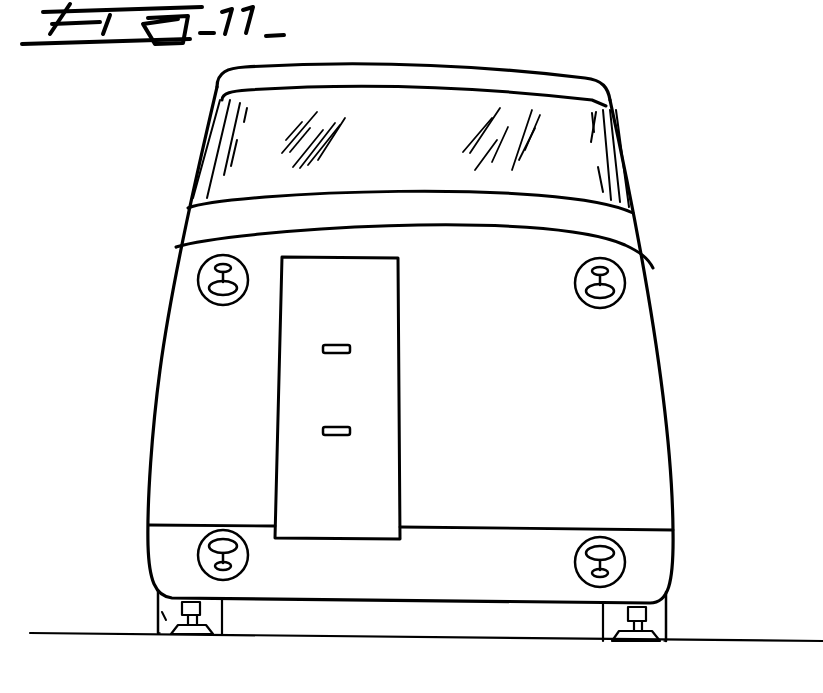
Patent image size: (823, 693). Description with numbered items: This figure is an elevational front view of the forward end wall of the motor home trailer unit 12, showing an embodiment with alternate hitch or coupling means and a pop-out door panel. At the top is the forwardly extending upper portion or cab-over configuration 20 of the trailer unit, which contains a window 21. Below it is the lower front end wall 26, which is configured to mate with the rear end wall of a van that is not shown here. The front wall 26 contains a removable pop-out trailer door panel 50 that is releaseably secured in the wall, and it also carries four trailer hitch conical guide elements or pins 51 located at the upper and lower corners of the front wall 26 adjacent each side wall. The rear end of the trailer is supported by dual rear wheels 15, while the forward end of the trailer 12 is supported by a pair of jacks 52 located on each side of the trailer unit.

The motor home trailer unit 12 is at (196, 84).
The cab-over configuration 20 is at (398, 80).
The window 21 is at (618, 180).
The lower front end wall 26 is at (187, 307).
The pop-out trailer door panel 50 is at (297, 482).
The trailer hitch conical guide elements or pins 51 is at (243, 277).
The jacks 52 is at (200, 610).
The dual rear wheels 15 is at (158, 622).